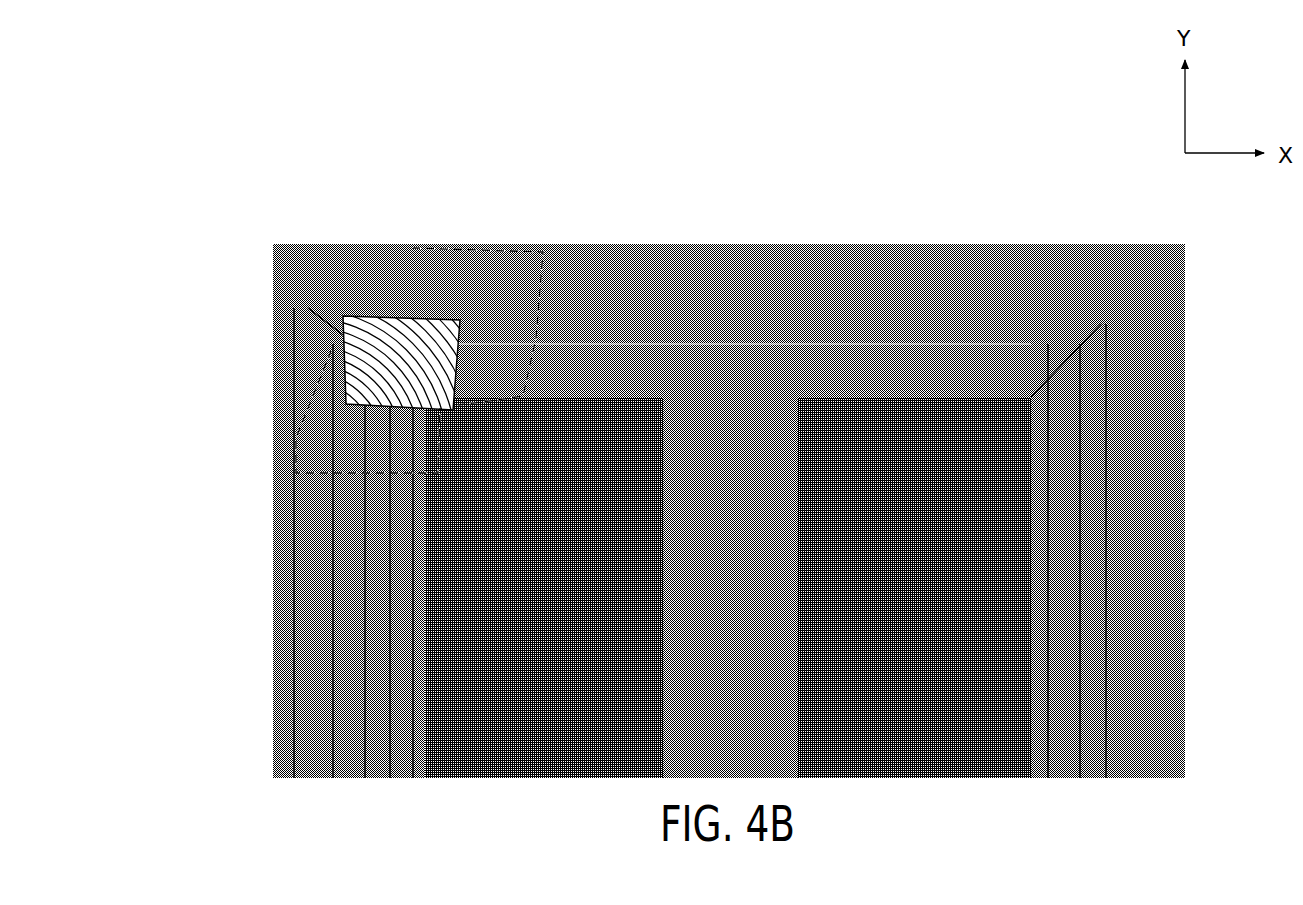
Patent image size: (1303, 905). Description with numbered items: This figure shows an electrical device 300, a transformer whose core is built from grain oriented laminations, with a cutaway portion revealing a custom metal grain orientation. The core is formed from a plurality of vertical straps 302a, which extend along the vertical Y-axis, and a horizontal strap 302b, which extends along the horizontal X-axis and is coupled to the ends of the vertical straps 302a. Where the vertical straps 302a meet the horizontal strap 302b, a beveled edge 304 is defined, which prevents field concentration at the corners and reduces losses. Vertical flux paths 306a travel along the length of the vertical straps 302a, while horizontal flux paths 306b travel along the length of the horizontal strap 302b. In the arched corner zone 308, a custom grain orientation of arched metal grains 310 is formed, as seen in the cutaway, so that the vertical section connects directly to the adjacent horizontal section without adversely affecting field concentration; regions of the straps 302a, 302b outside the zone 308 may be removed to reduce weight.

The electrical device 300 is at (250, 198).
The vertical straps 302a is at (650, 493).
The horizontal strap 302b is at (535, 405).
The beveled edge 304 is at (1107, 303).
The vertical flux paths 306a is at (293, 488).
The horizontal flux paths 306b is at (637, 275).
The arched corner zone 308 is at (358, 292).
The arched metal grains 310 is at (412, 312).